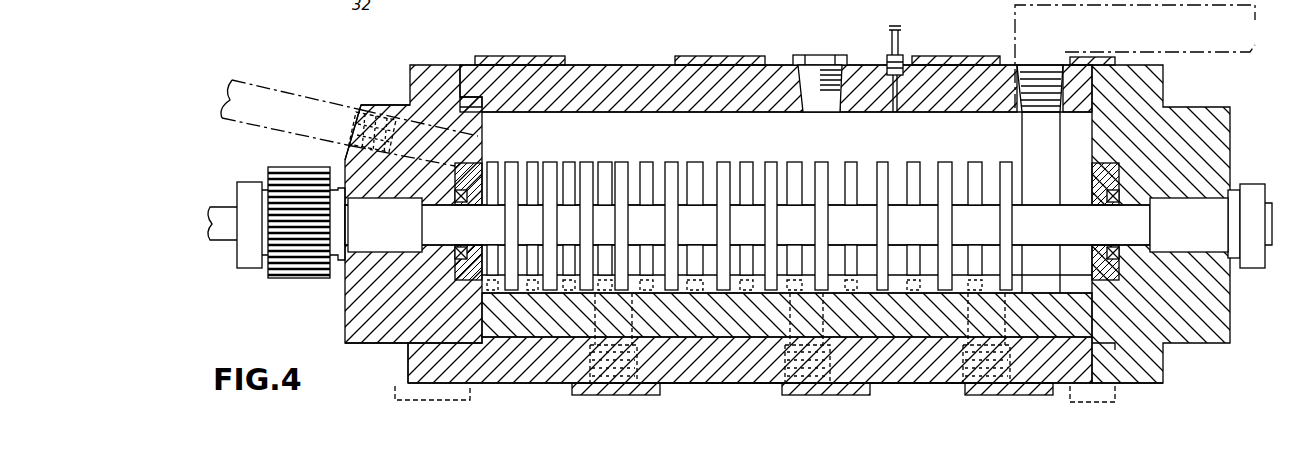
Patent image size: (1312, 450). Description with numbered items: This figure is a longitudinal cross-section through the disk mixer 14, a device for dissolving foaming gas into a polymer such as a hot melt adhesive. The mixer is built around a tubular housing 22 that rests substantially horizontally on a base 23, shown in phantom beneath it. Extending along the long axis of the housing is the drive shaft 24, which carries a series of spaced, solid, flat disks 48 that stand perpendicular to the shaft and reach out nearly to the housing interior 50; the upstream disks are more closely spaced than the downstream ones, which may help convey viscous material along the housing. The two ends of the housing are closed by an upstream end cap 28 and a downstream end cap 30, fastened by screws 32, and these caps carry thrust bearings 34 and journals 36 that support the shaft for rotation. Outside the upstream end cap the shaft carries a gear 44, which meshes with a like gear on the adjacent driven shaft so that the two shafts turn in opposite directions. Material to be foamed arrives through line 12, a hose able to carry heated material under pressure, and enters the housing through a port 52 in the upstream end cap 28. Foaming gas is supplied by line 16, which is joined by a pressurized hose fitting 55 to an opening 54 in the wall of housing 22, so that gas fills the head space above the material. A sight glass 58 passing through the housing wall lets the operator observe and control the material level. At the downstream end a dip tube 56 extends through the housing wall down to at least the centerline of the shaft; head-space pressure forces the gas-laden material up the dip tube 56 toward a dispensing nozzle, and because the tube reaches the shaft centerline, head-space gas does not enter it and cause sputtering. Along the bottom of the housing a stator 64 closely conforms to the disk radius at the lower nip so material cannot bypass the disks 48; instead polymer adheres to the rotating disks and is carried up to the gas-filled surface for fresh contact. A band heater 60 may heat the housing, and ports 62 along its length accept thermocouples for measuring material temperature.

The line 12 is at (292, 82).
The disk mixer 14 is at (322, 334).
The line 16 is at (892, 35).
The tubular housing 22 is at (622, 78).
The base 23 is at (395, 396).
The drive shaft 24 is at (1126, 236).
The upstream end cap 28 is at (421, 72).
The downstream end cap 30 is at (1212, 130).
The screws 32 is at (1163, 56).
The thrust bearings 34 is at (466, 205).
The journals 36 is at (400, 237).
The gear 44 is at (290, 280).
The disks 48 is at (778, 162).
The housing interior 50 is at (657, 112).
The port 52 is at (405, 128).
The opening 54 is at (895, 112).
The pressurized hose fitting 55 is at (905, 62).
The dip tube 56 is at (1043, 160).
The sight glass 58 is at (820, 56).
The band heater 60 is at (960, 390).
The ports 62 is at (745, 392).
The stator 64 is at (1075, 312).